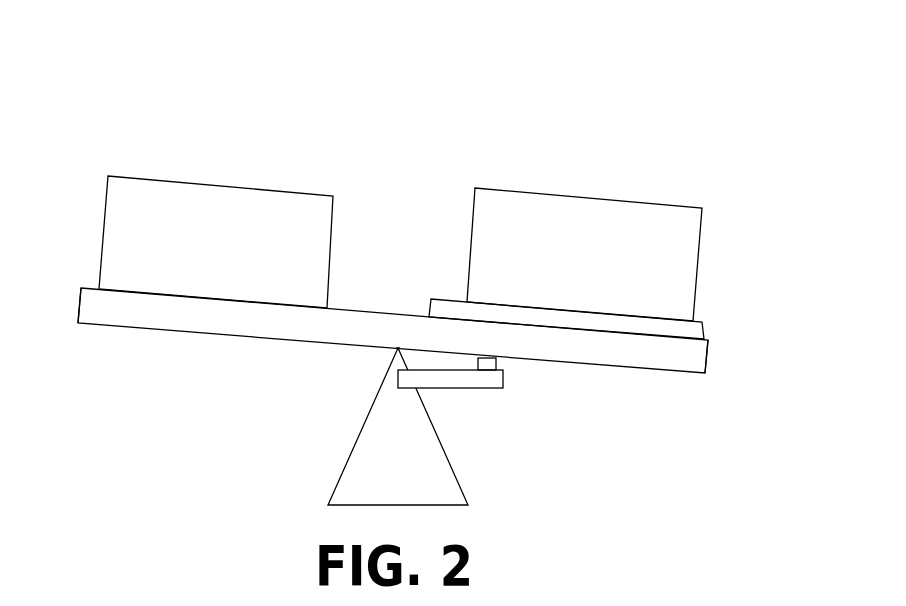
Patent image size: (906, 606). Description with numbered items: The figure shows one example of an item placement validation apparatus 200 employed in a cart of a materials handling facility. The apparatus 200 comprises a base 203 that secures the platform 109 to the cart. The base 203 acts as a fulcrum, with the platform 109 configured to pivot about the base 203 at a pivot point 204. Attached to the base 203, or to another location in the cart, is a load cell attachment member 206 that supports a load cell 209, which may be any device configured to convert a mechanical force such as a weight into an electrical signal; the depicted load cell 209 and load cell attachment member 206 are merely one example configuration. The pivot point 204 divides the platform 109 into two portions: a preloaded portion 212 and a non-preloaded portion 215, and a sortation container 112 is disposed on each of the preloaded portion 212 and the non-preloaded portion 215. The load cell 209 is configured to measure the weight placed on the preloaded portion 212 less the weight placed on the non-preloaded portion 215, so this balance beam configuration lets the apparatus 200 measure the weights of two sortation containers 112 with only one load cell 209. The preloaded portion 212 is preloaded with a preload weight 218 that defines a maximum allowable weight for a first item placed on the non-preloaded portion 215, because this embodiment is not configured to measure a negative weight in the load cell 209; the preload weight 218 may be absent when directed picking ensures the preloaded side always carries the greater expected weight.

The item placement validation apparatus 200 is at (150, 63).
The platform 109 is at (64, 293).
The sortation container 112 is at (183, 200).
The non-preloaded portion 215 is at (167, 313).
The preloaded portion 212 is at (664, 348).
The preload weight 218 is at (673, 332).
The base 203 is at (398, 483).
The pivot point 204 is at (375, 359).
The load cell attachment member 206 is at (463, 382).
The load cell 209 is at (485, 365).